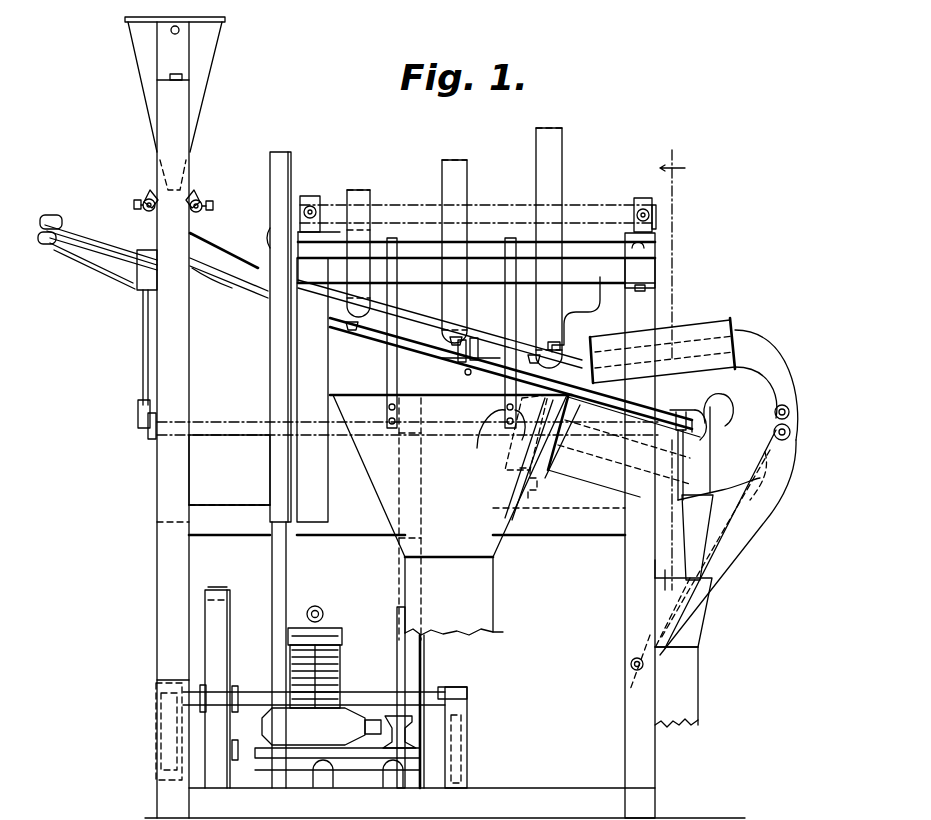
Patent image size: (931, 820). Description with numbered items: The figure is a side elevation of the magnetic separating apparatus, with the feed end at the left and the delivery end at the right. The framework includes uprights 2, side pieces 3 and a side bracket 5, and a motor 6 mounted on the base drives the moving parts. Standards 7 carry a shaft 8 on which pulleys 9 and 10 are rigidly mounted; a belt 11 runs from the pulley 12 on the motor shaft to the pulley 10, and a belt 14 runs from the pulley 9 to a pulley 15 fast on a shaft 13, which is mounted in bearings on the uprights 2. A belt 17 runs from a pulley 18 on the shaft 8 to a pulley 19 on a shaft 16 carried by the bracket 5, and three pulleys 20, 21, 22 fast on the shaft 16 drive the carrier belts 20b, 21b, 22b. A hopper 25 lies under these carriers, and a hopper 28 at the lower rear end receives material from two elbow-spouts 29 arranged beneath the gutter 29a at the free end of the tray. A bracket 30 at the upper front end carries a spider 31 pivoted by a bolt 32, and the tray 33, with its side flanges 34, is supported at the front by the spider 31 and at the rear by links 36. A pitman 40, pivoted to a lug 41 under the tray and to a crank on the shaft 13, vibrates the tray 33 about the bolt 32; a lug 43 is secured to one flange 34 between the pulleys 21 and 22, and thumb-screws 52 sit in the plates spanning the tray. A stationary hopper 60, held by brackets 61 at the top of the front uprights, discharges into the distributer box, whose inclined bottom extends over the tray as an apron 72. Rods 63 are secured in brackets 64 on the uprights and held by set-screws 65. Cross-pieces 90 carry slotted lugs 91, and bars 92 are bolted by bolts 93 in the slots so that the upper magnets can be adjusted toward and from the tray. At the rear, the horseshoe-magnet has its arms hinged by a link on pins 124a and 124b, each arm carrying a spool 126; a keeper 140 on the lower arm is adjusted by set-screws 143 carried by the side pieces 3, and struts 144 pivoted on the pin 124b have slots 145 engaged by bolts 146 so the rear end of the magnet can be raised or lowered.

The uprights 2 is at (157, 626).
The side pieces 3 is at (229, 520).
The side bracket 5 is at (660, 268).
The motor 6 is at (673, 370).
The standards 7 is at (467, 738).
The shaft 8 is at (240, 690).
The pulley 9 is at (424, 662).
The pulley 10 is at (232, 606).
The belt 11 is at (157, 672).
The pulley 12 is at (182, 735).
The shaft 13 is at (238, 436).
The belt 14 is at (465, 640).
The pulley 15 is at (398, 450).
The shaft 16 is at (268, 242).
The belt 17 is at (288, 568).
The pulley 18 is at (250, 710).
The pulley 19 is at (292, 158).
The pulley 20 is at (372, 196).
The belt 20b is at (356, 186).
The pulley 21 is at (468, 170).
The belt 21b is at (454, 160).
The pulley 22 is at (565, 142).
The belt 22b is at (548, 128).
The hopper 25 is at (488, 552).
The hopper 28 is at (703, 636).
The elbow-spouts 29 is at (725, 522).
The gutter 29a is at (740, 416).
The bracket 30 is at (128, 296).
The spider 31 is at (93, 248).
The bolt 32 is at (58, 220).
The tray 33 is at (246, 292).
The side pieces or flanges 34 is at (220, 246).
The links 36 is at (618, 418).
The pitman 40 is at (695, 460).
The lug 41 is at (682, 410).
The lug 43 is at (466, 368).
The thumb-screws 52 is at (352, 328).
The stationary hopper 60 is at (212, 62).
The brackets 61 is at (164, 50).
The rod 63 is at (145, 212).
The brackets 64 is at (148, 195).
The set-screws 65 is at (135, 204).
The apron 72 is at (215, 290).
The cross-pieces 90 is at (655, 240).
The slotted lugs 91 is at (690, 182).
The bar 92 is at (608, 208).
The bolt 93 is at (656, 214).
The pin 124a is at (787, 406).
The pin 124b is at (789, 436).
The spool 126 is at (690, 345).
The keeper 140 is at (467, 354).
The set-screws 143 is at (556, 532).
The struts 144 is at (708, 560).
The slots 145 is at (658, 680).
The bolts 146 is at (628, 670).